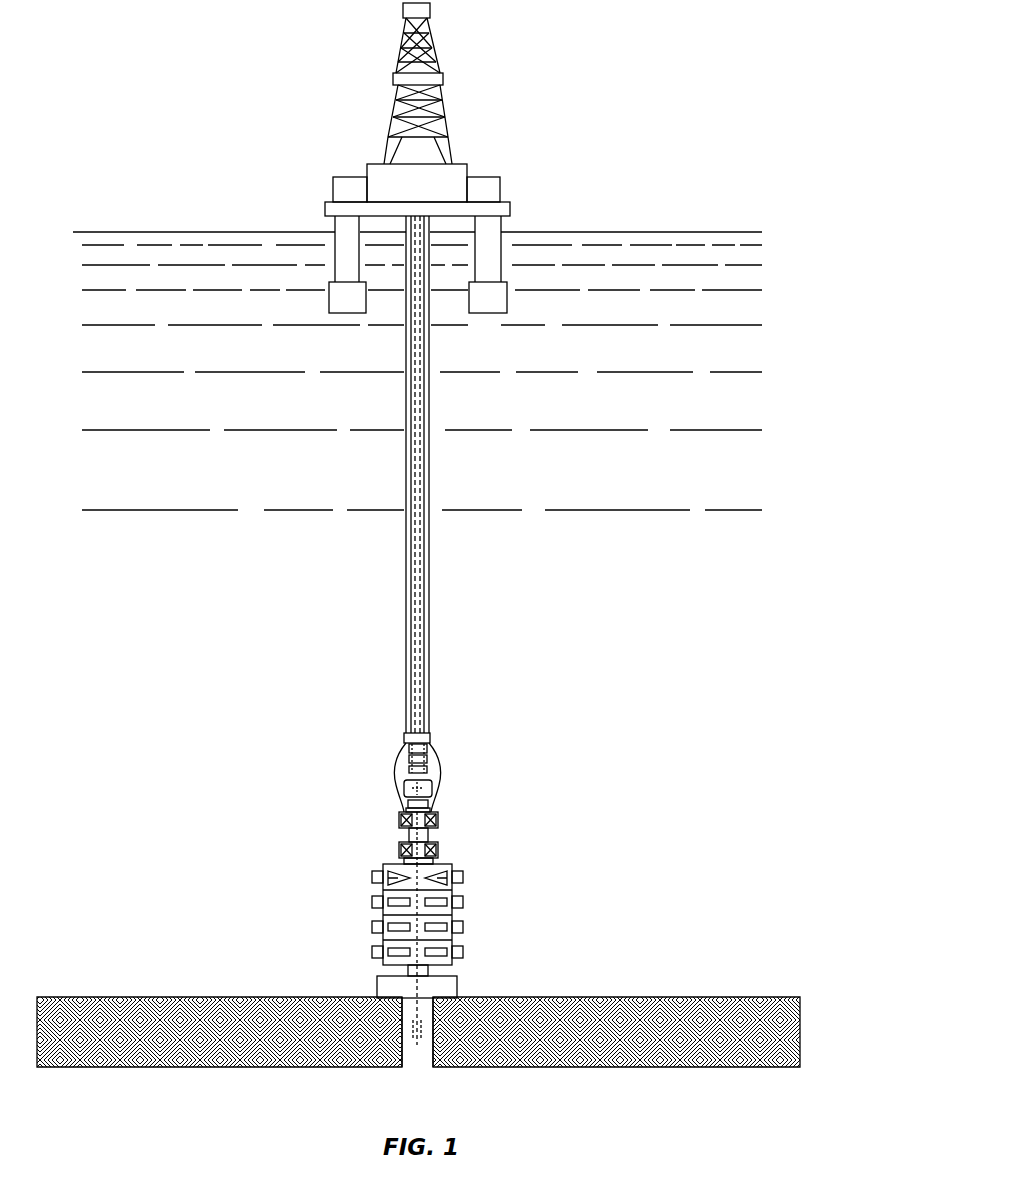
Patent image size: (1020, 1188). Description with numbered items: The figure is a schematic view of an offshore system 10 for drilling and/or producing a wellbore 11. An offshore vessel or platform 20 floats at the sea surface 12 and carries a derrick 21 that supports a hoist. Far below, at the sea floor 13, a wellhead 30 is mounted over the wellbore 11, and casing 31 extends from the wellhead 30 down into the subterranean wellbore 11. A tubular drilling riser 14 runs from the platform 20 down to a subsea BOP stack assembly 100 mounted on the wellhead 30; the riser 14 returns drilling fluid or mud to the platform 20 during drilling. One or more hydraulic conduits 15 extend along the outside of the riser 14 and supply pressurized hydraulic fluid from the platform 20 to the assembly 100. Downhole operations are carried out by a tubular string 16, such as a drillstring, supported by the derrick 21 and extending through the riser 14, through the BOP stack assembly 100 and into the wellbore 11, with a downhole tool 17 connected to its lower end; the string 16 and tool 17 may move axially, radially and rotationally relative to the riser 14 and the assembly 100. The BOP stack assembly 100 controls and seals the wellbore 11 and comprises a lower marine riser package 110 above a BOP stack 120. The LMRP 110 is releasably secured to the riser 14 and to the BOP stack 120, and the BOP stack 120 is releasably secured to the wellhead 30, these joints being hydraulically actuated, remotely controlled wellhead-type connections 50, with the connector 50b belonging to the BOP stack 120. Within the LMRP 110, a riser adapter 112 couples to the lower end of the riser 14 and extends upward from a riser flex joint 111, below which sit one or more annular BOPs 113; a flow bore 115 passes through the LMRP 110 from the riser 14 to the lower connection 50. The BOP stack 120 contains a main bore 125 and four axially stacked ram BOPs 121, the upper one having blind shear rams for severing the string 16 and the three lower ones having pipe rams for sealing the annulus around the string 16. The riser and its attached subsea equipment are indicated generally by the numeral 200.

The offshore system 10 is at (529, 158).
The wellbore 11 is at (398, 1027).
The sea surface 12 is at (680, 232).
The sea floor 13 is at (722, 997).
The tubular drilling riser 14 is at (420, 474).
The hydraulic conduit 15 is at (430, 413).
The tubular string 16 is at (422, 630).
The downhole tool 17 is at (417, 1038).
The offshore vessel or platform 20 is at (457, 170).
The derrick 21 is at (437, 62).
The wellhead 30 is at (458, 985).
The casing 31 is at (425, 1060).
The wellhead-type connection 50 is at (438, 835).
The connector of the BOP stack 50b is at (407, 970).
The subsea BOP stack assembly 100 is at (418, 973).
The lower marine riser package 110 is at (437, 797).
The riser flex joint 111 is at (430, 790).
The riser adapter 112 is at (420, 762).
The annular BOP 113 is at (398, 852).
The flow bore 115 is at (408, 790).
The BOP stack 120 is at (401, 908).
The ram BOP 121 is at (470, 875).
The main bore 125 is at (383, 880).
The riser assembly 200 is at (486, 540).